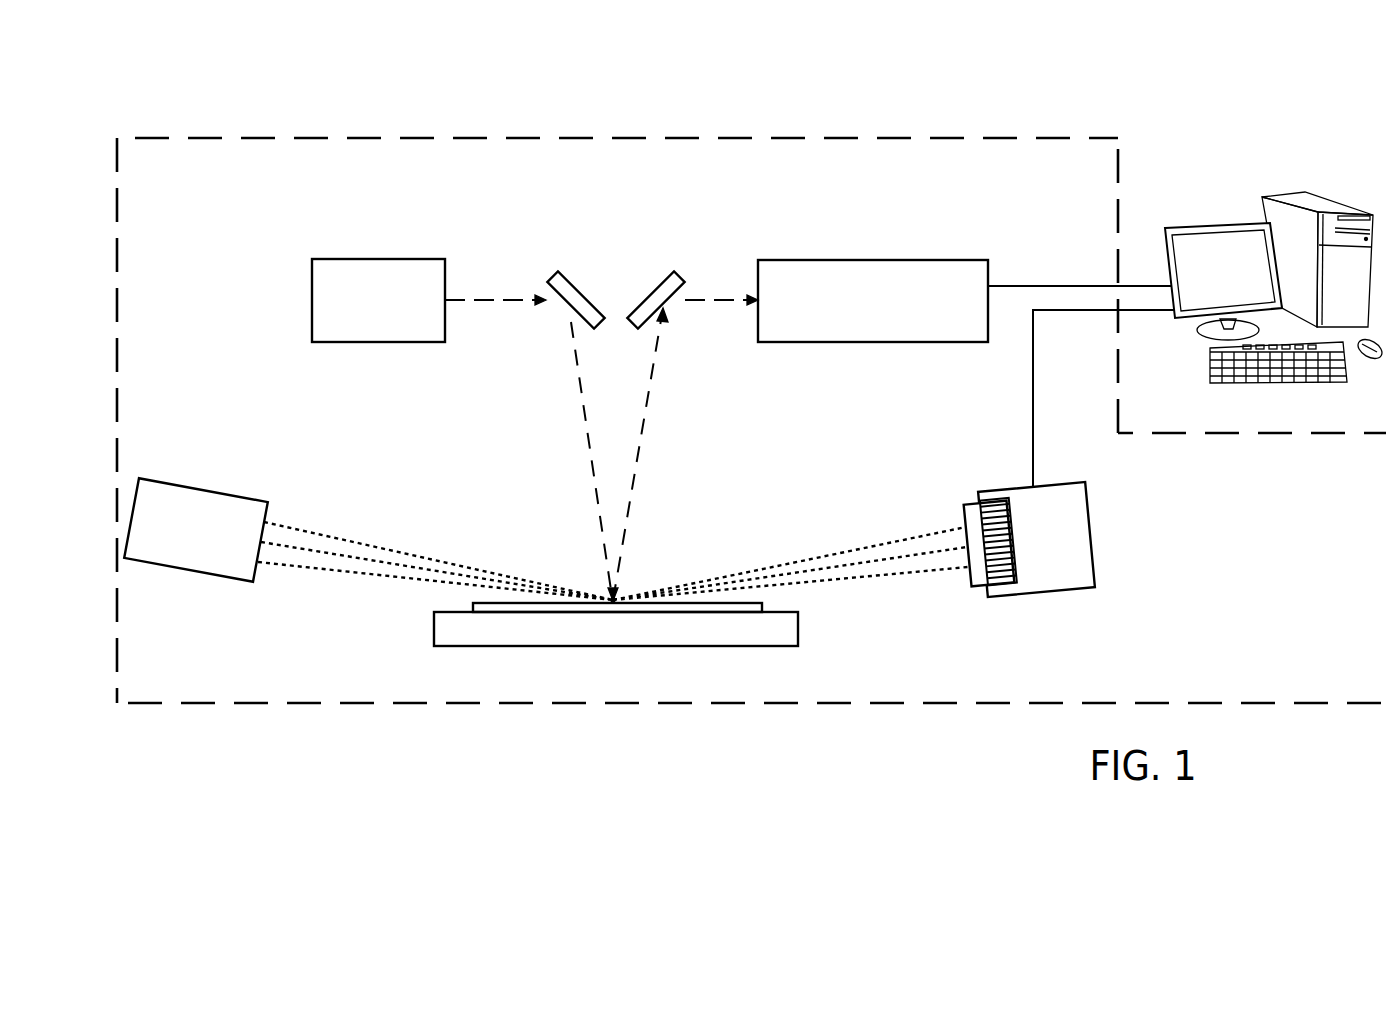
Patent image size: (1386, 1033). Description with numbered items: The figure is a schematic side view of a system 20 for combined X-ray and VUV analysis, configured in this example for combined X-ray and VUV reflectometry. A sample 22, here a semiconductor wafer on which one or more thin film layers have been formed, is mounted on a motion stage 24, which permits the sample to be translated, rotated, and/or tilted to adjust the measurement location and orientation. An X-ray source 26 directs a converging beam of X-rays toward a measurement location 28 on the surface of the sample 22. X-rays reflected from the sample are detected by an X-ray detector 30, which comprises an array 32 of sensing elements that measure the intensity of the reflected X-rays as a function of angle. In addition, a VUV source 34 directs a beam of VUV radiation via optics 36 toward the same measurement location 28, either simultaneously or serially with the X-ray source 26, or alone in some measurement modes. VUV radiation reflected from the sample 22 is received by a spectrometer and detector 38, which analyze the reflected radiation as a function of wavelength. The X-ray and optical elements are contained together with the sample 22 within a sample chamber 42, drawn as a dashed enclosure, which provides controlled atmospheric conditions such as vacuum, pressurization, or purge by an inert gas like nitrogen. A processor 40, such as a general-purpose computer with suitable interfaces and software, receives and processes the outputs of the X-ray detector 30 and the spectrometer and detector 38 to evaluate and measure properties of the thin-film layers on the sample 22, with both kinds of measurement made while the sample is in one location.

The system 20 is at (1236, 93).
The sample 22 is at (736, 603).
The motion stage 24 is at (798, 630).
The X-ray source 26 is at (206, 484).
The measurement location 28 is at (613, 606).
The X-ray detector 30 is at (1041, 594).
The array 32 is at (1014, 538).
The VUV source 34 is at (375, 259).
The optics 36 is at (580, 285).
The spectrometer and detector 38 is at (870, 260).
The processor 40 is at (1188, 228).
The sample chamber 42 is at (750, 138).